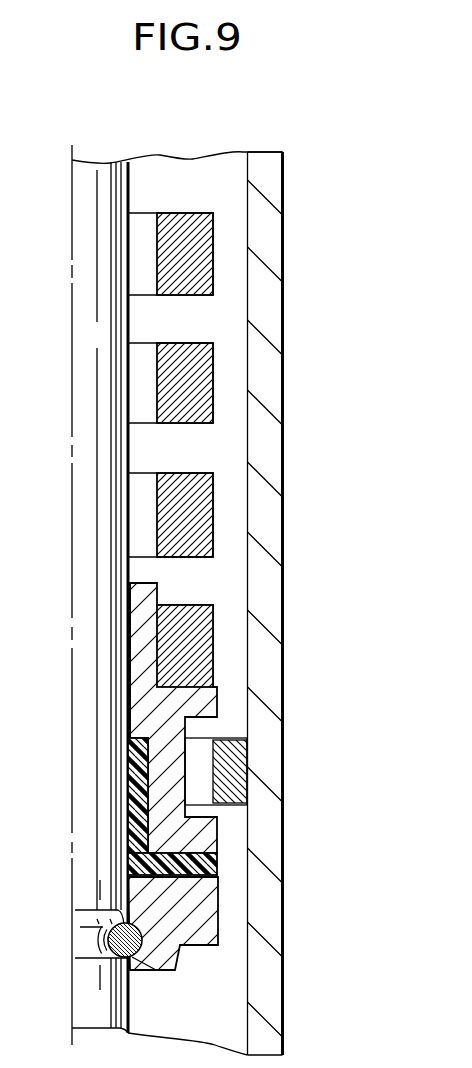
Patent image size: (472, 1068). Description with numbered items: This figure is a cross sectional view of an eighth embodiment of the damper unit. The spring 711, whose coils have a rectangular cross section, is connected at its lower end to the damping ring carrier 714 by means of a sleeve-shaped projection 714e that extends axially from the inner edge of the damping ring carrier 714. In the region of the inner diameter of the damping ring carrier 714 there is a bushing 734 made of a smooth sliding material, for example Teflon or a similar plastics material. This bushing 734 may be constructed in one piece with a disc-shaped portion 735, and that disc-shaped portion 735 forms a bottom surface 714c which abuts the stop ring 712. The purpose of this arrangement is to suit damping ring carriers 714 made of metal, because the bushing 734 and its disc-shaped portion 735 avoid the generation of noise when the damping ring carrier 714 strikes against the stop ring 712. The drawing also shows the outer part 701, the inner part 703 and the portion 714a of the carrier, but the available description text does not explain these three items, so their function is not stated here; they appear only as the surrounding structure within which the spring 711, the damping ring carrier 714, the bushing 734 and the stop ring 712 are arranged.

The housing 701 is at (272, 187).
The shaft 703 is at (105, 172).
The spring 711 is at (205, 378).
The stop ring 712 is at (207, 920).
The damping ring carrier 714 is at (190, 698).
The sleeve wall portion 714a is at (137, 665).
The bottom surface 714c is at (135, 888).
The sleeve-shaped projection 714e is at (147, 638).
The bushing 734 is at (128, 810).
The disc-shaped portion 735 is at (216, 866).